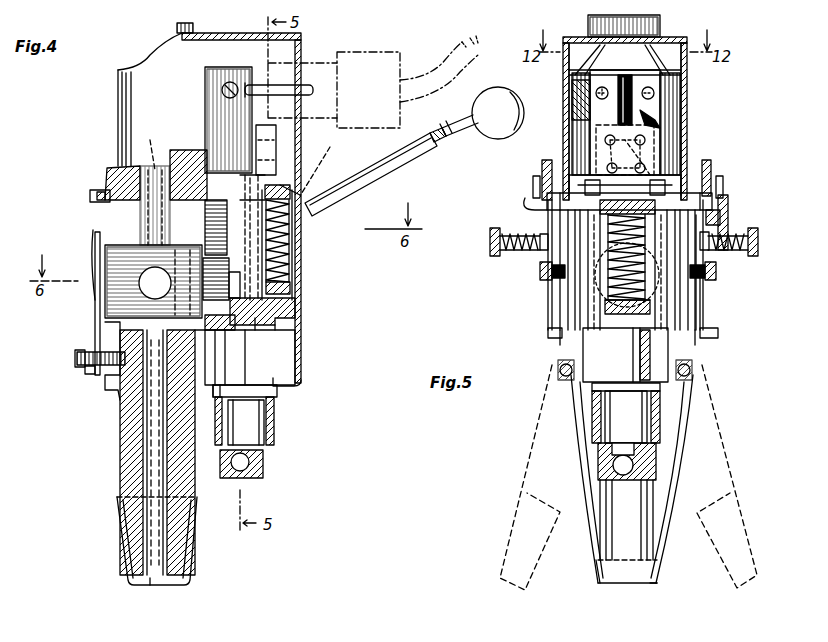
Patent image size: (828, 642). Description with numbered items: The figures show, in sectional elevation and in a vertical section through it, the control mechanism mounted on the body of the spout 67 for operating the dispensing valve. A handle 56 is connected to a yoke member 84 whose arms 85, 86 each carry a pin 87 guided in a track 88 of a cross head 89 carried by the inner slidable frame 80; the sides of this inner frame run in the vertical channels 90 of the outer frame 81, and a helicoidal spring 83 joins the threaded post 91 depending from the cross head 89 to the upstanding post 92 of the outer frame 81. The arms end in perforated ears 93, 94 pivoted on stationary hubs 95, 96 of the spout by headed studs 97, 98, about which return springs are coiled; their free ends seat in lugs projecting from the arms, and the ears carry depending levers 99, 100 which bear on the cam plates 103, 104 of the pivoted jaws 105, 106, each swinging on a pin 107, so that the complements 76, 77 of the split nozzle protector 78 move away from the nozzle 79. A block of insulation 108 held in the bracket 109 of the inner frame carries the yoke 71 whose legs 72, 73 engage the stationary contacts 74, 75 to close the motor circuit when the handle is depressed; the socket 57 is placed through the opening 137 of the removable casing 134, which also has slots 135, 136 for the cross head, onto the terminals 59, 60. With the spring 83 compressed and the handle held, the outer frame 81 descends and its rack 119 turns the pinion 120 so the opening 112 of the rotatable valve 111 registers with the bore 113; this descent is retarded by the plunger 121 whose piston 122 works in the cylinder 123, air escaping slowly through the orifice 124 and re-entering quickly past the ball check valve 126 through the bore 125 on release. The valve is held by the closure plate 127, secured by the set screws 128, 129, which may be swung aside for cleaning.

In FIG. 4, the handle 56 is at (476, 112).
In FIG. 4, the socket 57 is at (372, 50).
In FIG. 5, the socket 57 is at (682, 70).
In FIG. 4, the stationary terminal conductor 59 is at (300, 84).
In FIG. 5, the stationary terminal conductor 59 is at (572, 88).
In FIG. 5, the stationary terminal conductor 60 is at (670, 85).
In FIG. 4, the spout 67 is at (120, 425).
In FIG. 5, the yoke 71 is at (608, 92).
In FIG. 5, the leg 72 is at (622, 76).
In FIG. 5, the leg 73 is at (652, 92).
In FIG. 5, the stationary metal contact 74 is at (575, 125).
In FIG. 5, the stationary metal contact 75 is at (660, 125).
In FIG. 5, the complementary part 76 is at (597, 575).
In FIG. 5, the complementary part 77 is at (660, 565).
In FIG. 4, the split nozzle protector 78 is at (155, 586).
In FIG. 5, the split nozzle protector 78 is at (646, 585).
In FIG. 4, the nozzle 79 is at (125, 557).
In FIG. 5, the nozzle 79 is at (656, 490).
In FIG. 4, the inner slidable frame 80 is at (215, 145).
In FIG. 5, the inner slidable frame 80 is at (655, 160).
In FIG. 4, the outer frame 81 is at (280, 320).
In FIG. 5, the outer frame 81 is at (690, 195).
In FIG. 4, the helicoidal spring 83 is at (295, 240).
In FIG. 5, the helicoidal spring 83 is at (705, 290).
In FIG. 4, the yoke member 84 is at (436, 144).
In FIG. 5, the arm 85 is at (542, 170).
In FIG. 4, the arm 86 is at (368, 166).
In FIG. 5, the arm 86 is at (708, 160).
In FIG. 4, the pin 87 is at (305, 200).
In FIG. 5, the pin 87 is at (533, 188).
In FIG. 4, the track 88 is at (320, 162).
In FIG. 5, the track 88 is at (555, 190).
In FIG. 5, the cross head 89 is at (655, 140).
In FIG. 4, the vertical channel 90 is at (290, 245).
In FIG. 5, the externally threaded post 91 is at (619, 257).
In FIG. 4, the upstanding post 92 is at (290, 288).
In FIG. 5, the upstanding post 92 is at (610, 308).
In FIG. 5, the perforated ear 93 is at (545, 262).
In FIG. 5, the perforated ear 94 is at (716, 272).
In FIG. 5, the stationary hub 95 is at (540, 278).
In FIG. 5, the stationary hub 96 is at (706, 272).
In FIG. 5, the headed stud 97 is at (490, 240).
In FIG. 5, the headed stud 98 is at (740, 232).
In FIG. 5, the depending lever 99 is at (595, 280).
In FIG. 4, the depending lever 100 is at (93, 330).
In FIG. 5, the depending lever 100 is at (700, 318).
In FIG. 5, the cam plate 103 is at (548, 335).
In FIG. 5, the cam plate 104 is at (718, 334).
In FIG. 5, the pivoted jaw 105 is at (571, 478).
In FIG. 5, the pivoted jaw 106 is at (672, 438).
In FIG. 4, the pin 107 is at (125, 395).
In FIG. 5, the pin 107 is at (692, 372).
In FIG. 4, the block of insulation 108 is at (252, 64).
In FIG. 5, the block of insulation 108 is at (624, 27).
In FIG. 4, the bracket 109 is at (275, 150).
In FIG. 5, the bracket 109 is at (660, 120).
In FIG. 4, the rotatable valve 111 is at (105, 268).
In FIG. 4, the opening 112 is at (140, 290).
In FIG. 4, the bore 113 is at (118, 172).
In FIG. 4, the vertical rack 119 is at (300, 250).
In FIG. 5, the vertical rack 119 is at (705, 215).
In FIG. 4, the geared pinion 120 is at (260, 325).
In FIG. 5, the geared pinion 120 is at (608, 300).
In FIG. 4, the plunger 121 is at (255, 348).
In FIG. 5, the plunger 121 is at (668, 355).
In FIG. 4, the piston 122 is at (280, 390).
In FIG. 5, the piston 122 is at (662, 400).
In FIG. 4, the cylinder 123 is at (275, 410).
In FIG. 5, the cylinder 123 is at (662, 422).
In FIG. 4, the orifice 124 is at (266, 440).
In FIG. 4, the bore 125 is at (262, 462).
In FIG. 5, the bore 125 is at (633, 463).
In FIG. 4, the seat 126 is at (245, 478).
In FIG. 5, the seat 126 is at (632, 476).
In FIG. 4, the closure plate 127 is at (75, 358).
In FIG. 4, the set screw 128 is at (90, 200).
In FIG. 4, the set screw 129 is at (88, 374).
In FIG. 4, the casing 134 is at (300, 305).
In FIG. 5, the casing 134 is at (682, 80).
In FIG. 5, the slot 135 is at (552, 272).
In FIG. 5, the slot 136 is at (722, 210).
In FIG. 4, the opening 137 is at (310, 100).